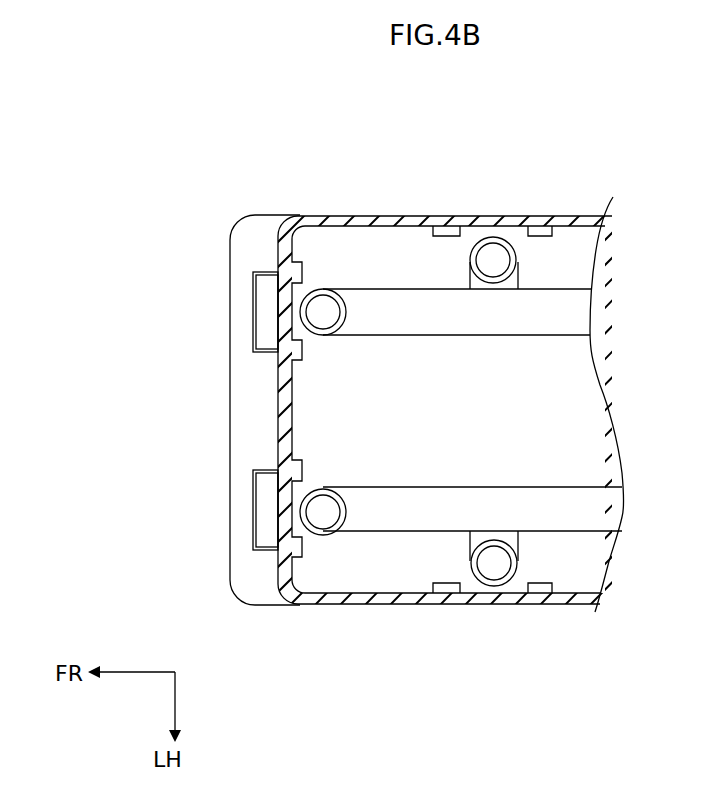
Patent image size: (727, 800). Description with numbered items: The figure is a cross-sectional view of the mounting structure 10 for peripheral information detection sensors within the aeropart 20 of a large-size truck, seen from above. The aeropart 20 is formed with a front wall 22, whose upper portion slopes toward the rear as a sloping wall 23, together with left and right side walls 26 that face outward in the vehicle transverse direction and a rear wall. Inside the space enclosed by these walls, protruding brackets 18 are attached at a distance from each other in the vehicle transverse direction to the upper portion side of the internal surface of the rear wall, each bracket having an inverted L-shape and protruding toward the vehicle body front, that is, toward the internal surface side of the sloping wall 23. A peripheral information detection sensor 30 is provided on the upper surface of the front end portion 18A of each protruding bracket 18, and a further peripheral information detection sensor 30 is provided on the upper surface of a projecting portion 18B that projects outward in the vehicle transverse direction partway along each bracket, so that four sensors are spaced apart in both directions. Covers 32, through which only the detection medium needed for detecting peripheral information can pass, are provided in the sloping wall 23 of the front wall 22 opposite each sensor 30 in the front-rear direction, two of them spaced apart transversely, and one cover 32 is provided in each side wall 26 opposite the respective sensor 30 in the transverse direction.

The mounting structure 10 is at (252, 178).
The aeropart 20 is at (230, 210).
The front wall 22 is at (169, 410).
The sloping wall 23 is at (250, 408).
The side walls 26 is at (413, 215).
The cover 32 is at (527, 223).
The protruding bracket 18 is at (462, 322).
The front end portion 18A is at (322, 289).
The projecting portion 18B is at (522, 277).
The peripheral information detection sensor 30 is at (490, 255).